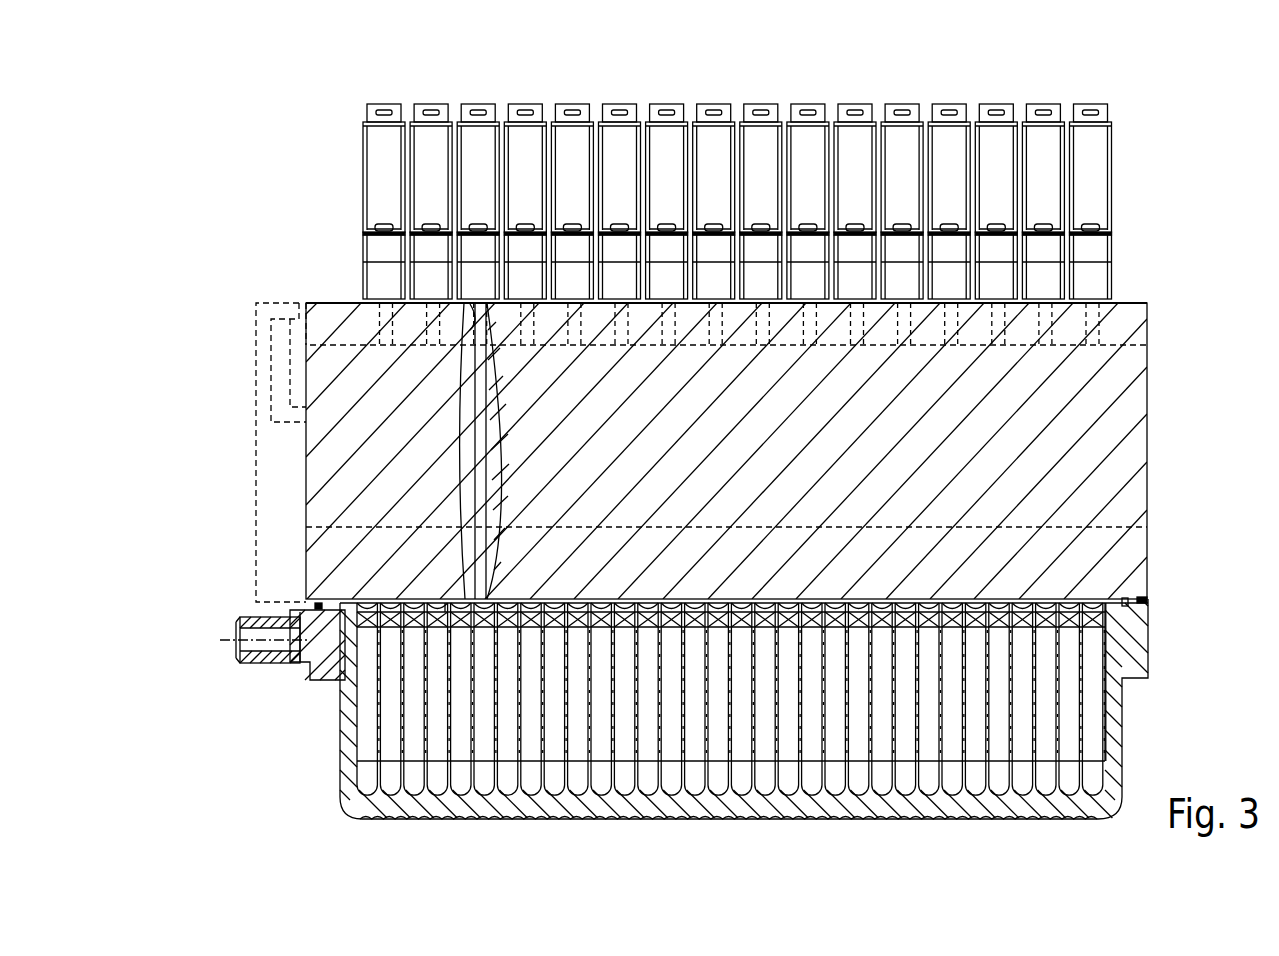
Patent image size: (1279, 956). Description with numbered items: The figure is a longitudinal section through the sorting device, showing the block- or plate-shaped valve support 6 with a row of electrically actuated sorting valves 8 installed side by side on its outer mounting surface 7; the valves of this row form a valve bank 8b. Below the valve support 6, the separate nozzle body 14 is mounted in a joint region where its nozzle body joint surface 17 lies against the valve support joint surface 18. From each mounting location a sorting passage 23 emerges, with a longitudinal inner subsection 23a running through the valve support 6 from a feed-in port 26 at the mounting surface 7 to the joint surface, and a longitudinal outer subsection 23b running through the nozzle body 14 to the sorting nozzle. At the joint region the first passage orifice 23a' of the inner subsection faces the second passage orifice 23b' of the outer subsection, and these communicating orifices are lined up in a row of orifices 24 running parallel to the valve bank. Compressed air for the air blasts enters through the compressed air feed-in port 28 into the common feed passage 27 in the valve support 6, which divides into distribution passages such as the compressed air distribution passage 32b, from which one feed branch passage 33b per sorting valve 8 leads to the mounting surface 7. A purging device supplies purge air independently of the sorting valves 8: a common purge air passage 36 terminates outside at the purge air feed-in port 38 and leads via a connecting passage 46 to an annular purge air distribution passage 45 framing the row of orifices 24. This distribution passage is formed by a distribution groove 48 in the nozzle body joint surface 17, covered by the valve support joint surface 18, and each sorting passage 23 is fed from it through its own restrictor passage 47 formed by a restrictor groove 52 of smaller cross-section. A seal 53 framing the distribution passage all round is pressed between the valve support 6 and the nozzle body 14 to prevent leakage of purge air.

The valve support 6 is at (1150, 362).
The mounting surface 7 is at (1137, 295).
The sorting valves 8 is at (428, 181).
The second valve bank 8b is at (1132, 168).
The nozzle body 14 is at (1155, 652).
The nozzle body joint surface 17 is at (873, 592).
The valve support joint surface 18 is at (852, 630).
The sorting passage 23 is at (517, 765).
The longitudinal inner subsection 23a is at (542, 451).
The first passage orifice 23a' is at (536, 577).
The longitudinal outer subsection 23b is at (734, 710).
The second passage orifice 23b' is at (426, 577).
The row of orifices 24 is at (956, 597).
The feed-in port 26 is at (459, 352).
The common feed passage 27 is at (278, 375).
The compressed air feed-in port 28 is at (284, 302).
The second compressed air distribution passage 32b is at (356, 348).
The feed branch passage 33b is at (728, 340).
The purge air passage 36 is at (337, 601).
The purge air feed-in port 38 is at (259, 655).
The purge air distribution passage 45 is at (1128, 598).
The connecting passage 46 is at (318, 665).
The restrictor passage 47 is at (712, 598).
The distribution groove 48 is at (731, 694).
The restrictor groove 52 is at (744, 573).
The seal 53 is at (1150, 600).